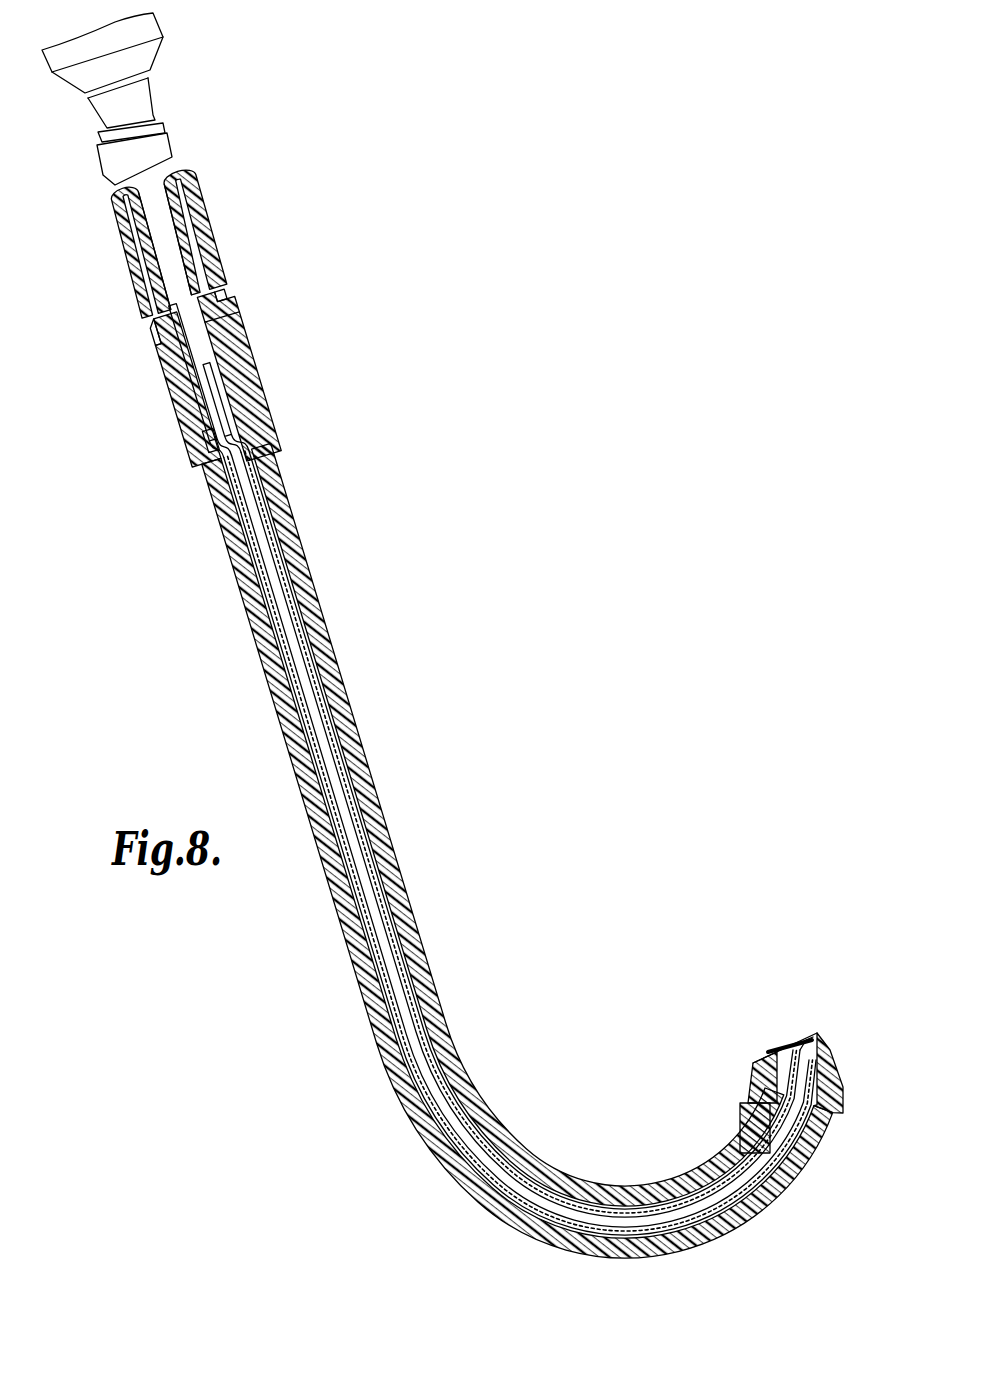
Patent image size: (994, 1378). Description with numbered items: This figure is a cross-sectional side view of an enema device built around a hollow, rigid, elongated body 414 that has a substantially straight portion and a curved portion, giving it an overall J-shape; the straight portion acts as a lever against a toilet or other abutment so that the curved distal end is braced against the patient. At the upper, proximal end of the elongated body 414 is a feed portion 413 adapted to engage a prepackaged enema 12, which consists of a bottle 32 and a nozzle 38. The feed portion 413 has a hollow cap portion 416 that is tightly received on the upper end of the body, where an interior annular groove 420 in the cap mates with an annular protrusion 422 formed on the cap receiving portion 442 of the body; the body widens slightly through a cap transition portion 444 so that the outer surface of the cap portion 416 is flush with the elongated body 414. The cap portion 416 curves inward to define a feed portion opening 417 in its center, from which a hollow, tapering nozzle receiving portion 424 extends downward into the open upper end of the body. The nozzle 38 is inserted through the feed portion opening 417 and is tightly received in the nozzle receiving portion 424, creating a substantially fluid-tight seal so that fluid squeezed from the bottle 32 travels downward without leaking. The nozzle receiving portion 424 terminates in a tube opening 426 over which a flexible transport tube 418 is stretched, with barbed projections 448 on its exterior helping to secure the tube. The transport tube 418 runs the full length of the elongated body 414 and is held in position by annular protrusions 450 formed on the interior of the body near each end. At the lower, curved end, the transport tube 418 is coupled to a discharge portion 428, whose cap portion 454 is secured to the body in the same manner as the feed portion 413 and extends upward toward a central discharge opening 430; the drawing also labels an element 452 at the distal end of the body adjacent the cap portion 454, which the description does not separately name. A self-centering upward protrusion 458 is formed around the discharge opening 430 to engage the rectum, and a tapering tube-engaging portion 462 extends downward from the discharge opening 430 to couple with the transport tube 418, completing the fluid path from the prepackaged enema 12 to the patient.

The prepackaged enema 12 is at (164, 58).
The bottle 32 is at (156, 21).
The nozzle 38 is at (162, 214).
The feed portion 413 is at (224, 225).
The elongated body 414 is at (355, 724).
The cap portion 416 is at (240, 270).
The feed portion opening 417 is at (172, 162).
The transport tube 418 is at (292, 716).
The annular groove 420 is at (226, 300).
The annular protrusion 422 is at (236, 325).
The nozzle receiving portion 424 is at (236, 346).
The tube opening 426 is at (216, 436).
The discharge portion 428 is at (761, 1065).
The discharge opening 430 is at (812, 1036).
The cap receiving portion 442 is at (150, 330).
The cap transition portion 444 is at (162, 364).
The barbed projections 448 is at (246, 376).
The annular protrusions 450 is at (210, 440).
The distal coupling 452 is at (736, 1158).
The cap portion 454 is at (748, 1085).
The self-centering upward protrusion 458 is at (836, 1060).
The tube-engaging portion 462 is at (753, 1063).